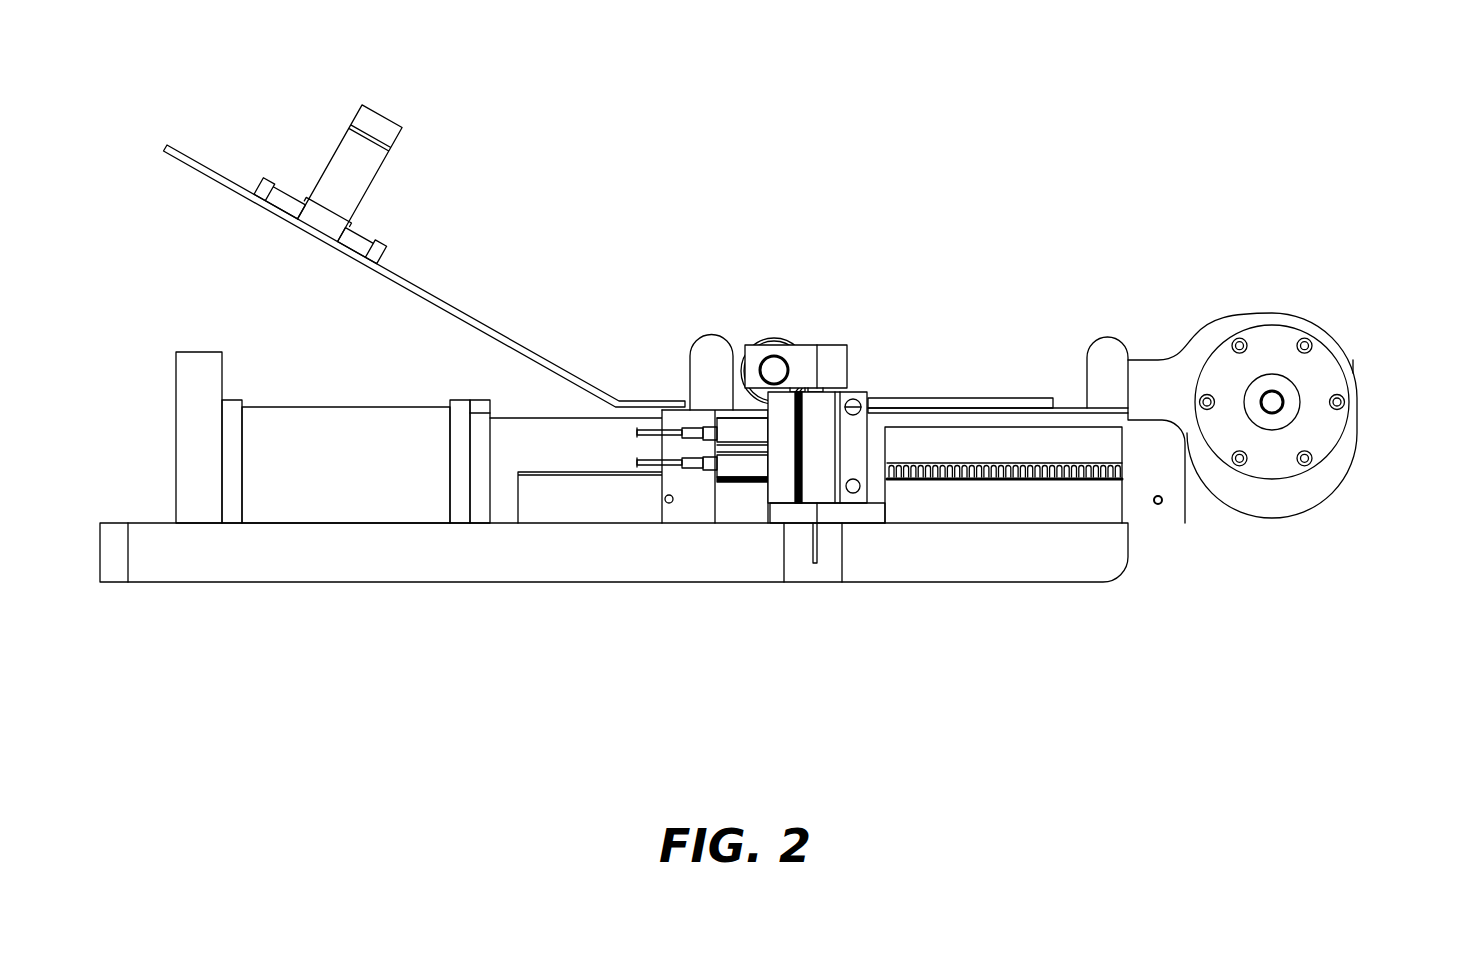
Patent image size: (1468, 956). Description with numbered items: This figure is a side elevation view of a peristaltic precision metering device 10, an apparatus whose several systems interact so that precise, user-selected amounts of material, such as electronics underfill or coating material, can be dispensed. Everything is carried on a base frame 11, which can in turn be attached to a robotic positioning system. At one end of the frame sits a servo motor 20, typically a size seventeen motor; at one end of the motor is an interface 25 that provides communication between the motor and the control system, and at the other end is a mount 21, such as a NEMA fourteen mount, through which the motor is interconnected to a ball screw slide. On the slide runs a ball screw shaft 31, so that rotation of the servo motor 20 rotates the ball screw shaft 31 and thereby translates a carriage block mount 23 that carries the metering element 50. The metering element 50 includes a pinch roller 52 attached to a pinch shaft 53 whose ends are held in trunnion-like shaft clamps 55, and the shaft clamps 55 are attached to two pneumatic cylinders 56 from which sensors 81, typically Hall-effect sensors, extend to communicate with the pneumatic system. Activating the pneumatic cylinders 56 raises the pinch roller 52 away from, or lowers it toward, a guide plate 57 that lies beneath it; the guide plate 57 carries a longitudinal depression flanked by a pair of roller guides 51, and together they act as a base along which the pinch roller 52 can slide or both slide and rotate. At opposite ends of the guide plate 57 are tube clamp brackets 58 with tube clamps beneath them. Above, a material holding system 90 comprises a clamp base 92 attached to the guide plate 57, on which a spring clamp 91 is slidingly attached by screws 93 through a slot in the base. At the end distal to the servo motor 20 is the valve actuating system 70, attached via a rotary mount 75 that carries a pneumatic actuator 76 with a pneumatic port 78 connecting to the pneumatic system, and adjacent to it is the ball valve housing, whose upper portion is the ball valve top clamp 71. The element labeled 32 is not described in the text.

The peristaltic precision metering device 10 is at (1323, 95).
The base frame 11 is at (176, 565).
The servo motor 20 is at (344, 507).
The mount 21 is at (479, 510).
The carriage block mount 23 is at (873, 513).
The interface 25 is at (197, 367).
The ball screw shaft 31 is at (988, 470).
The carriage 32 is at (521, 412).
The metering element 50 is at (872, 320).
The roller guides 51 is at (1010, 400).
The pinch roller 52 is at (783, 345).
The pinch shaft 53 is at (770, 368).
The shaft clamps 55 is at (833, 353).
The pneumatic cylinders 56 is at (823, 490).
The guide plate 57 is at (1065, 410).
The tube clamp bracket 58 is at (713, 343).
The valve actuating system 70 is at (1365, 312).
The ball valve top clamp 71 is at (1358, 367).
The rotary mount 75 is at (1327, 485).
The pneumatic actuator 76 is at (1260, 340).
The pneumatic port 78 is at (1272, 398).
The sensors 81 is at (650, 433).
The material holding system 90 is at (427, 105).
The spring clamp 91 is at (350, 173).
The clamp base 92 is at (181, 148).
The screws 93 is at (320, 220).